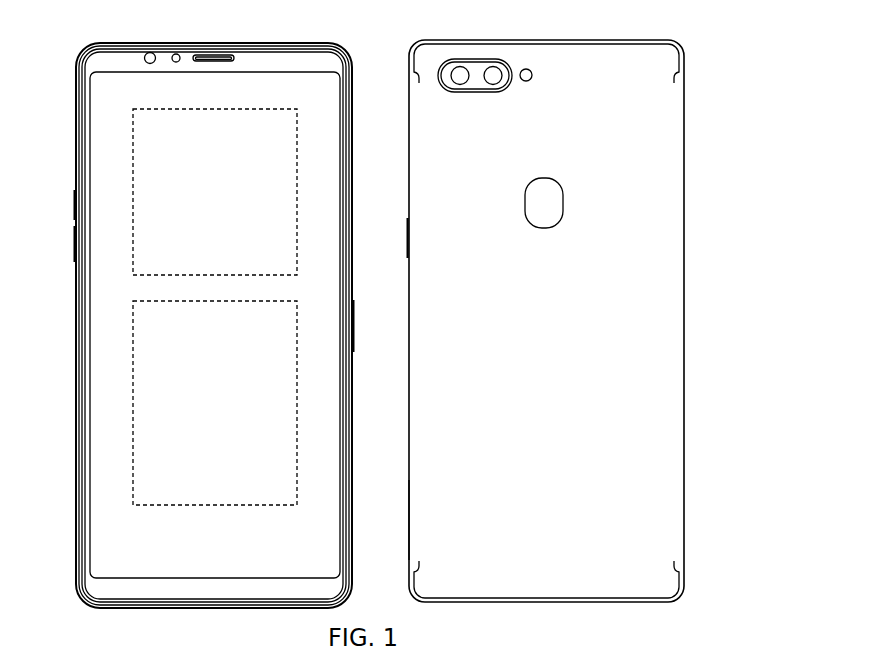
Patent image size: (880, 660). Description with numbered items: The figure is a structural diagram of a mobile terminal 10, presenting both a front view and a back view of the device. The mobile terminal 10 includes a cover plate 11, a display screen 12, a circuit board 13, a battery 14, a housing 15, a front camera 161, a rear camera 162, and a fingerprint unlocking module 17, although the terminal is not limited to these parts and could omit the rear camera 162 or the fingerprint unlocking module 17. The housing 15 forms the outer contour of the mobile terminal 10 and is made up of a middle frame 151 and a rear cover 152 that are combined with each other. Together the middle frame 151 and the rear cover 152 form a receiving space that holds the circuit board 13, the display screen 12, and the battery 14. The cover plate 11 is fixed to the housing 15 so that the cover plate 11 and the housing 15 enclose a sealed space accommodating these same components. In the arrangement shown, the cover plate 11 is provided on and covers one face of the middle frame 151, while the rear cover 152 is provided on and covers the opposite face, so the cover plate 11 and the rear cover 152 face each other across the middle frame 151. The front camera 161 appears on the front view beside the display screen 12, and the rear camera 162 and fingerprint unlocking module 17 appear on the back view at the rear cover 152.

The mobile terminal 10 is at (75, 50).
The cover plate 11 is at (345, 391).
The display screen 12 is at (340, 226).
The circuit board 13 is at (296, 167).
The battery 14 is at (297, 357).
The housing 15 is at (412, 50).
The middle frame 151 is at (350, 463).
The rear cover 152 is at (410, 529).
The front camera 161 is at (158, 55).
The rear camera 162 is at (482, 62).
The fingerprint unlocking module 17 is at (527, 189).